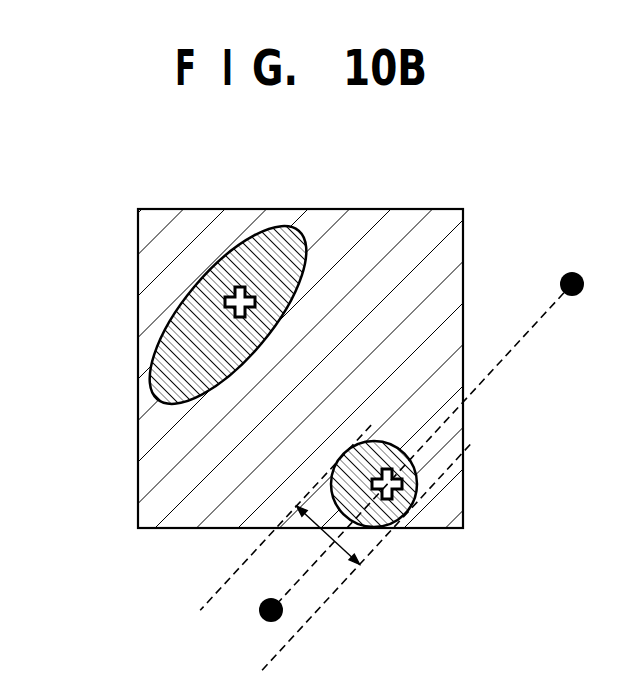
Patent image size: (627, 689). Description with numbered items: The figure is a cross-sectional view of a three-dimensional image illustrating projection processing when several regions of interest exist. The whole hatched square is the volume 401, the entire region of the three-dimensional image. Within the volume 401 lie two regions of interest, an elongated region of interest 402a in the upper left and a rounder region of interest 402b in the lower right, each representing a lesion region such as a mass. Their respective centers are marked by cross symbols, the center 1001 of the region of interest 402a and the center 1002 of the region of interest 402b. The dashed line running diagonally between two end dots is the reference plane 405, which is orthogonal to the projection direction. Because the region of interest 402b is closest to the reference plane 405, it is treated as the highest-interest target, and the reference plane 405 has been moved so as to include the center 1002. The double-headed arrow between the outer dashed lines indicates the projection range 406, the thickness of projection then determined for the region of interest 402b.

The volume 401 is at (167, 228).
The region of interest 402a is at (158, 400).
The region of interest 402b is at (403, 515).
The reference plane 405 is at (573, 271).
The projection range 406 is at (333, 557).
The center 1001 is at (224, 302).
The center 1002 is at (405, 484).